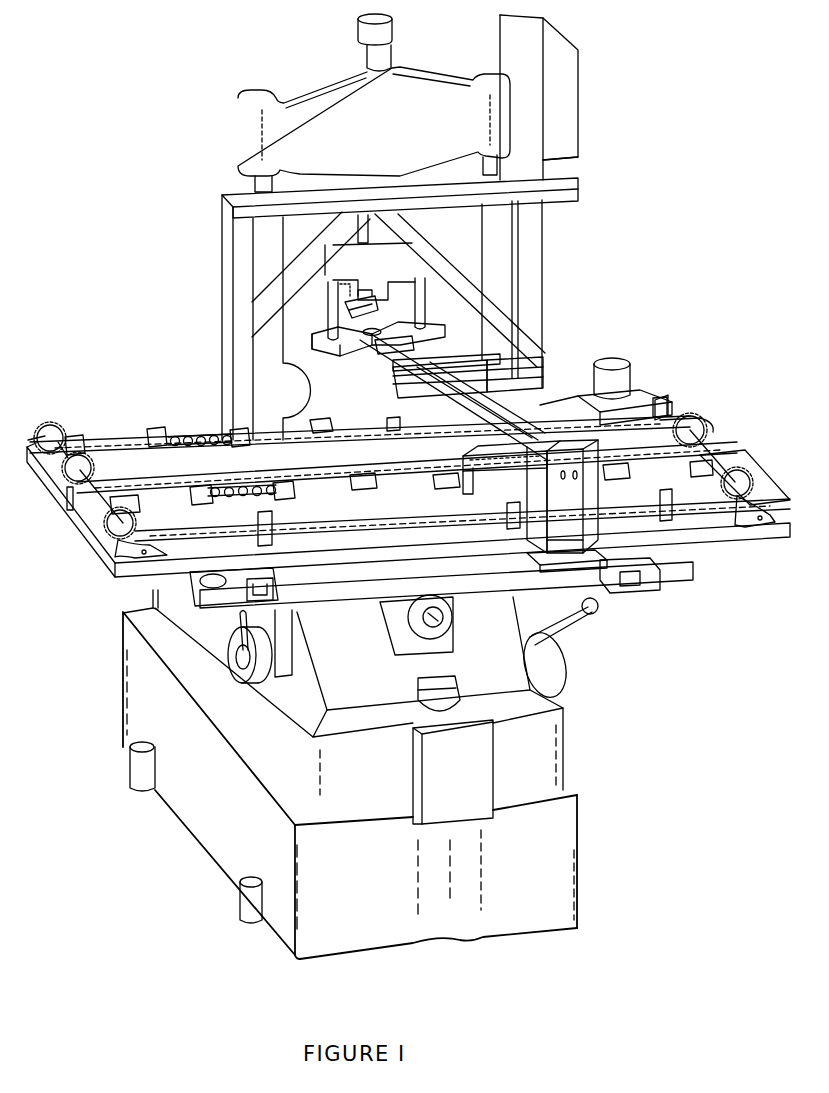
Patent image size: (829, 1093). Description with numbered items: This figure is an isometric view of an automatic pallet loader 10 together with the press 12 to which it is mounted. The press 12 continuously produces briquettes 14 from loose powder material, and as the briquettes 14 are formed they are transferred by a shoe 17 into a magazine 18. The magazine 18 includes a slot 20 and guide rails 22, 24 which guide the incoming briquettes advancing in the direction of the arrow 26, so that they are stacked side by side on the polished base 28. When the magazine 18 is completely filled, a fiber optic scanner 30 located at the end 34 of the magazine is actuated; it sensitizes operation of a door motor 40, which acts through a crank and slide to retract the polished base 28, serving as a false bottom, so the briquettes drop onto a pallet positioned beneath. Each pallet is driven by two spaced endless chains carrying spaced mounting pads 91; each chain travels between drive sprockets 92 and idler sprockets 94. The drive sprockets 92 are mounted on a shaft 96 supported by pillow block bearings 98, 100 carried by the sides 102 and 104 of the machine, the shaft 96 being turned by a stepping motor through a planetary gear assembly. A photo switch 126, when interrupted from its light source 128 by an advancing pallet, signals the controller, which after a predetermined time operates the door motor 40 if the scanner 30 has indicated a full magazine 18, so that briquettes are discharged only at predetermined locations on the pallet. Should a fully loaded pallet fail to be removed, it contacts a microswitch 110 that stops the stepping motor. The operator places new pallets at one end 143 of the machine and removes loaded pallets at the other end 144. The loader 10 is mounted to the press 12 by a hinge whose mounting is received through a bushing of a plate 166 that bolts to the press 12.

The automatic pallet loader 10 is at (720, 318).
The press 12 is at (608, 842).
The briquettes 14 is at (388, 333).
The shoe 17 is at (378, 307).
The magazine 18 is at (455, 385).
The slot 20 is at (515, 360).
The guide rail 22 is at (432, 344).
The guide rail 24 is at (408, 392).
The arrow 26 is at (376, 333).
The polished base 28 is at (443, 437).
The fiber optic scanner 30 is at (475, 452).
The end 34 is at (500, 513).
The door motor 40 is at (613, 360).
The mounting pads 91 is at (215, 435).
The drive sprockets 92 is at (696, 425).
The idler sprockets 94 is at (76, 472).
The shaft 96 is at (700, 432).
The pillow block bearing 98 is at (748, 530).
The pillow block bearing 100 is at (672, 413).
The side 102 is at (704, 568).
The side 104 is at (636, 404).
The microswitch 110 is at (67, 512).
The photo switch 126 is at (402, 451).
The light source 128 is at (440, 487).
The end 143 is at (728, 457).
The end 144 is at (27, 450).
The plate 166 is at (512, 50).